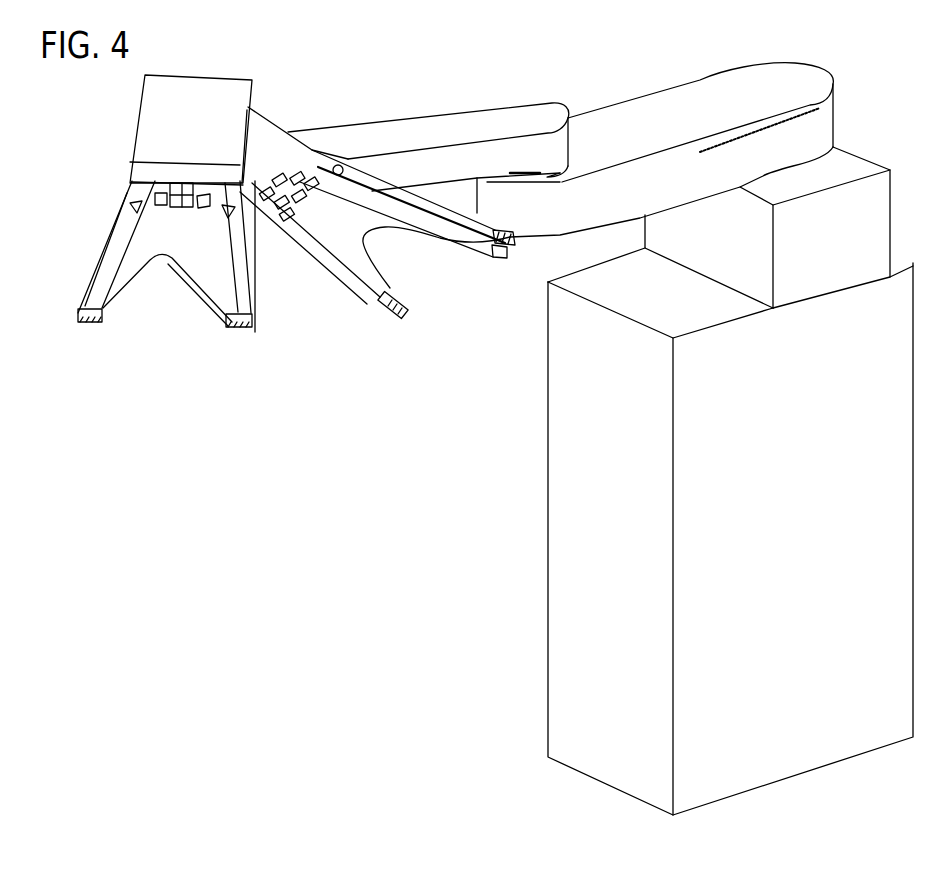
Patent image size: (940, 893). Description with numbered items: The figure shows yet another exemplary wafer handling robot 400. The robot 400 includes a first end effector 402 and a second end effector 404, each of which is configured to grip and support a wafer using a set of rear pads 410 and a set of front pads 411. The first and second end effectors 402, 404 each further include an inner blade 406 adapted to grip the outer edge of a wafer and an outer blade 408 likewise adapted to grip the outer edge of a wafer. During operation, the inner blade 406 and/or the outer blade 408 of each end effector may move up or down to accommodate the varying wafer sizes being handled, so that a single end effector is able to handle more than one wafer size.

The wafer handling robot 400 is at (512, 62).
The first end effector 402 is at (88, 210).
The second end effector 404 is at (293, 260).
The inner blade 406 is at (107, 300).
The outer blade 408 is at (244, 329).
The rear pads 410 is at (338, 170).
The front pads 411 is at (507, 238).